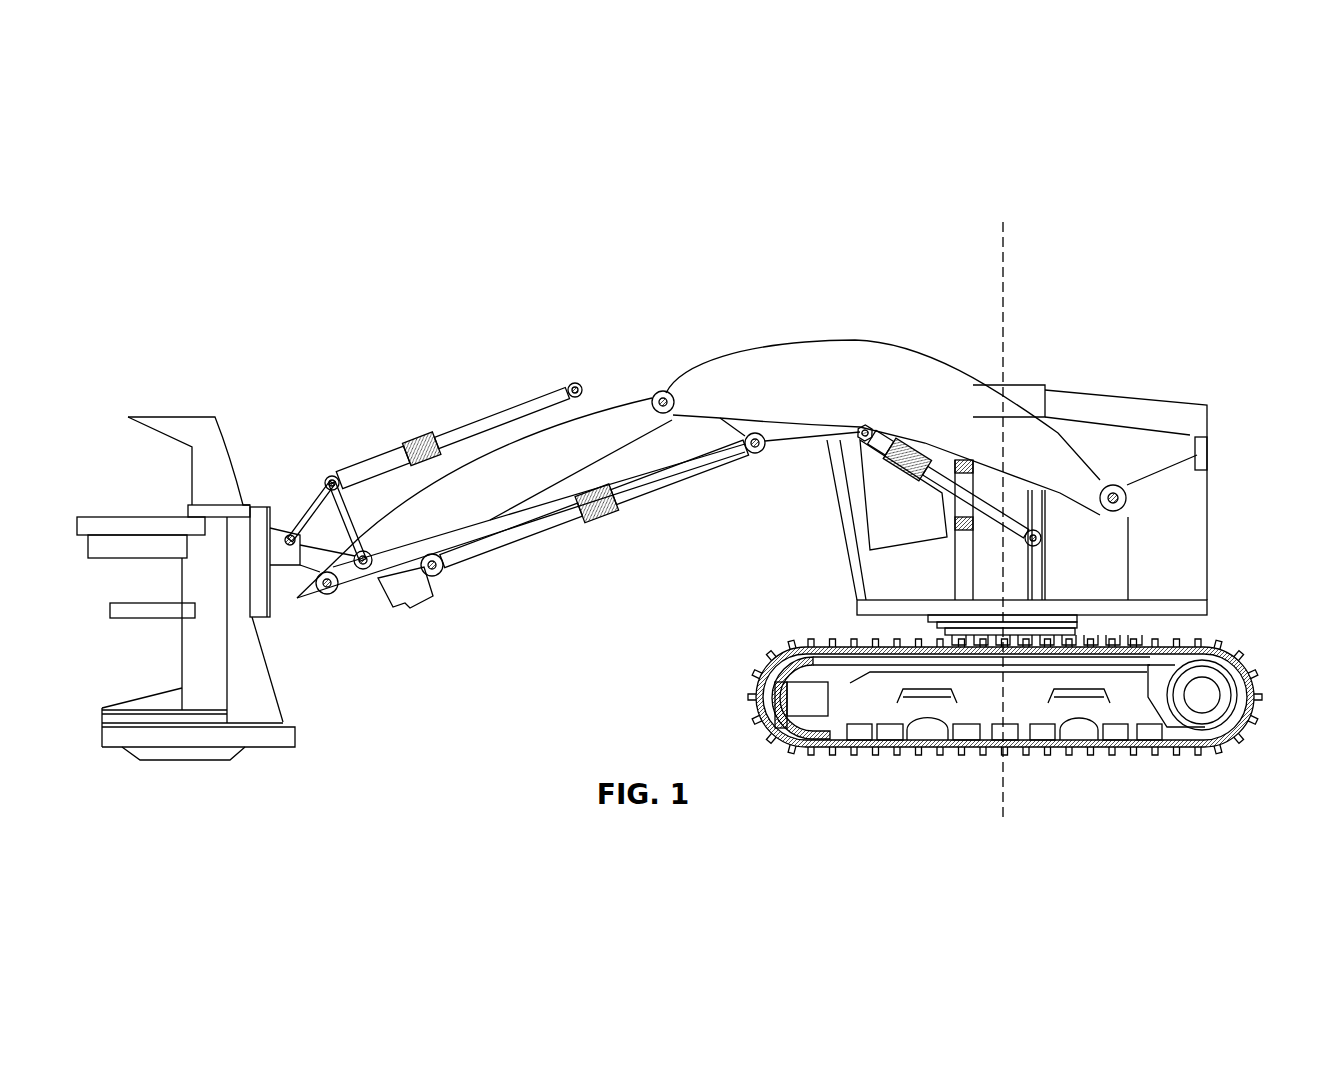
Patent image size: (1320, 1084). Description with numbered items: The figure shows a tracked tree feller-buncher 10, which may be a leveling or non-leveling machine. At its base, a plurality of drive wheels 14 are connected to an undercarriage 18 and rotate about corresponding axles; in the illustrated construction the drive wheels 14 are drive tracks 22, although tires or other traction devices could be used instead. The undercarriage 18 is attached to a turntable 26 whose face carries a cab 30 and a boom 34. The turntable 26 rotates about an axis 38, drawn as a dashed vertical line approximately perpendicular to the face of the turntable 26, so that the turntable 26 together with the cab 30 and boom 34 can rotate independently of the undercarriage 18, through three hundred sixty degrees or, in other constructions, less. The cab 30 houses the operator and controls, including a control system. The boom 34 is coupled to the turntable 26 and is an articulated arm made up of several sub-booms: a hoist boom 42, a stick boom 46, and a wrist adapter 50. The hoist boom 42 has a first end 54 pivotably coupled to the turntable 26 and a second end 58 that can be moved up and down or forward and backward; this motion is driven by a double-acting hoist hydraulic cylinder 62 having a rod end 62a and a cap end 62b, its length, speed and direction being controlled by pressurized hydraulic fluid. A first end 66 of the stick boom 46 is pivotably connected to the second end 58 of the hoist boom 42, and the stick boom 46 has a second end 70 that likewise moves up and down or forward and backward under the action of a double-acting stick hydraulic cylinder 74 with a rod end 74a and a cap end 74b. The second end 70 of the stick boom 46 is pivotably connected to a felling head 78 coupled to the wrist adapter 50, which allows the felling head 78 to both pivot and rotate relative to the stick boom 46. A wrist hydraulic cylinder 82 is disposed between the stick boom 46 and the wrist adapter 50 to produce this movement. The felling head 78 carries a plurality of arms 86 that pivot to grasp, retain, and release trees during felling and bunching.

The tree feller-buncher 10 is at (644, 248).
The drive wheels 14 is at (1213, 717).
The undercarriage 18 is at (1108, 702).
The drive tracks 22 is at (1240, 665).
The turntable 26 is at (1147, 633).
The cab 30 is at (1168, 457).
The boom 34 is at (637, 368).
The axis 38 is at (1008, 287).
The hoist boom 42 is at (795, 368).
The stick boom 46 is at (510, 467).
The wrist adapter 50 is at (275, 612).
The first end of the hoist boom 54 is at (1103, 478).
The second end of the hoist boom 58 is at (672, 396).
The hoist hydraulic cylinder 62 is at (943, 493).
The rod end 62a is at (893, 450).
The cap end 62b is at (1027, 543).
The first end of the stick boom 66 is at (617, 413).
The second end of the stick boom 70 is at (292, 537).
The stick hydraulic cylinder 74 is at (684, 476).
The rod end 74a is at (607, 517).
The cap end 74b is at (749, 454).
The felling head 78 is at (192, 468).
The wrist hydraulic cylinder 82 is at (447, 440).
The arms 86 is at (121, 548).